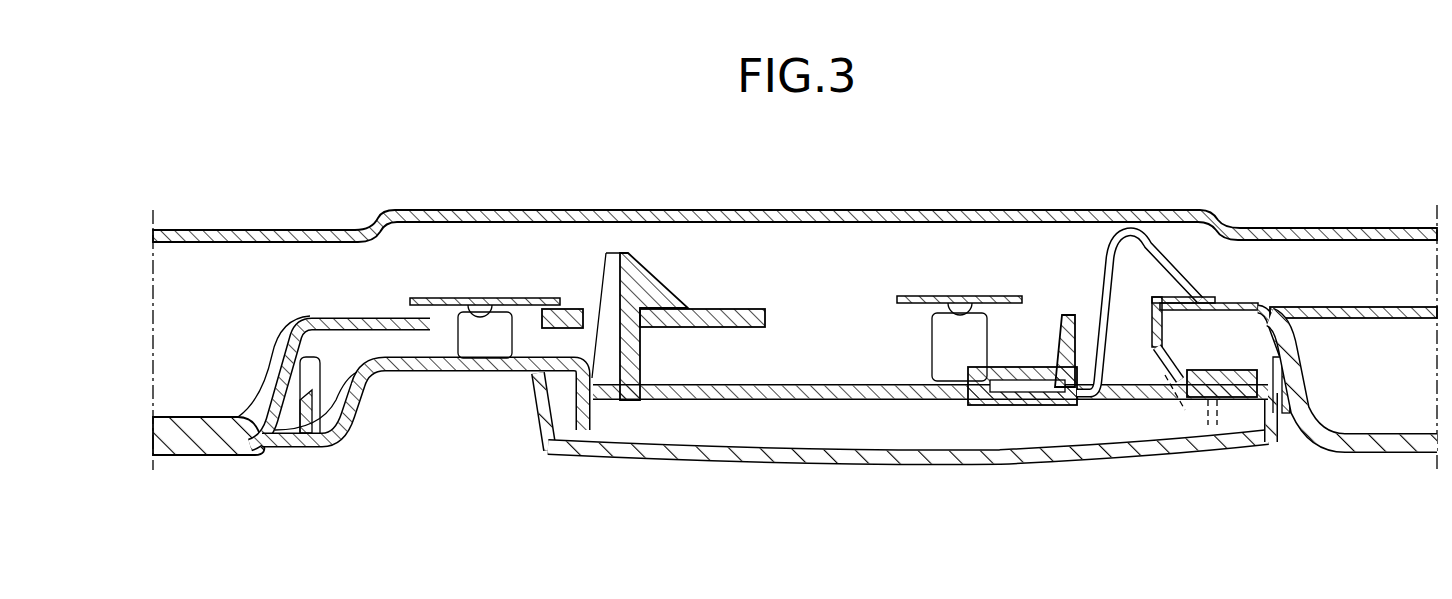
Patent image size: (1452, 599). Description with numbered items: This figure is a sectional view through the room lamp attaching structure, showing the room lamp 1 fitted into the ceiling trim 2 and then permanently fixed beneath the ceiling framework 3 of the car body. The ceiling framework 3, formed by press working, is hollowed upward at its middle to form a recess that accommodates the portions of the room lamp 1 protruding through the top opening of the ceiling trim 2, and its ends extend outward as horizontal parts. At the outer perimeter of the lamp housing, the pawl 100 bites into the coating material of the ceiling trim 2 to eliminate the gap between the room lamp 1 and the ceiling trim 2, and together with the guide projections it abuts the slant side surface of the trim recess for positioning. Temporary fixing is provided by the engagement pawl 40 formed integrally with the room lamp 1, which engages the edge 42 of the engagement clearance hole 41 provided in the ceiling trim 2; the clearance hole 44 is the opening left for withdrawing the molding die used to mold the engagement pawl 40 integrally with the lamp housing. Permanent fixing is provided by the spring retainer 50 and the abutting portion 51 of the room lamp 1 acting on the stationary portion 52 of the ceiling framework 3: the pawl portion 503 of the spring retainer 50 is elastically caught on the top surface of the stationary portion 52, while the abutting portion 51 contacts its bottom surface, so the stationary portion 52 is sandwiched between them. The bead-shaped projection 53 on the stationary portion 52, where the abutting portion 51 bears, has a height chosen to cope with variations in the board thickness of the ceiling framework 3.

The room lamp 1 is at (1038, 472).
The ceiling trim 2 is at (1338, 465).
The ceiling framework 3 is at (252, 212).
The engagement pawl 40 is at (650, 288).
The engagement clearance hole 41 is at (590, 305).
The edge 42 is at (712, 322).
The clearance hole 44 is at (690, 385).
The spring retainer 50 is at (1103, 272).
The abutting portion 51 is at (484, 345).
The stationary portion 52 is at (444, 297).
The bead-shaped projection 53 is at (486, 304).
The pawl 100 is at (268, 446).
The pawl portion 503 is at (1190, 300).